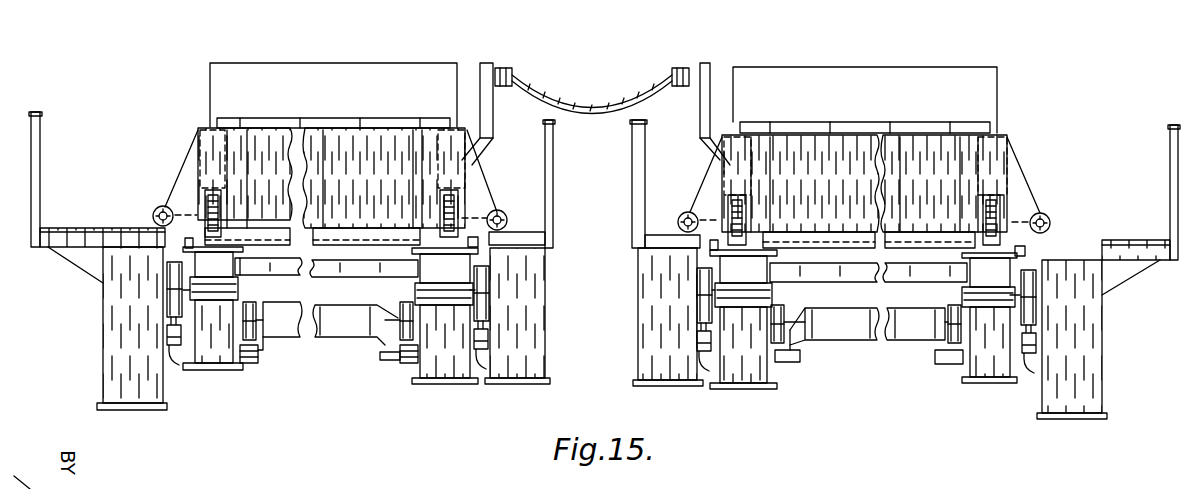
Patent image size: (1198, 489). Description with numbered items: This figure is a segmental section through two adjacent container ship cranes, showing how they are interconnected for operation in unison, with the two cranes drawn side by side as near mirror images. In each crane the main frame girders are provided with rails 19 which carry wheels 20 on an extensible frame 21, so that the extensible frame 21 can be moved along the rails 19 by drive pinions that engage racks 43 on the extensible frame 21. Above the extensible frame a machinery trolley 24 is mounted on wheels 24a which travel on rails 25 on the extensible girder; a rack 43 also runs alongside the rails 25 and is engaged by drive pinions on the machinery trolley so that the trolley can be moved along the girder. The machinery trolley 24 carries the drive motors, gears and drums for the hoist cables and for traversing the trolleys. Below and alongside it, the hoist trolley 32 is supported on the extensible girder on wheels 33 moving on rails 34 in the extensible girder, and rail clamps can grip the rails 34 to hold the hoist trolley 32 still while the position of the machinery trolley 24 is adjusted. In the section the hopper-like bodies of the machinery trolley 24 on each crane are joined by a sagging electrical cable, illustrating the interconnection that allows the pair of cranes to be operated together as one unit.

The rails 19 is at (170, 326).
The wheels 20 is at (168, 285).
The extensible frame 21 is at (350, 278).
The machinery trolley 24 is at (292, 127).
The wheels 24a is at (207, 197).
The rails 25 is at (213, 243).
The hoist trolley 32 is at (322, 338).
The wheels 33 is at (252, 304).
The rails 34 is at (255, 352).
The rack 43 is at (185, 242).